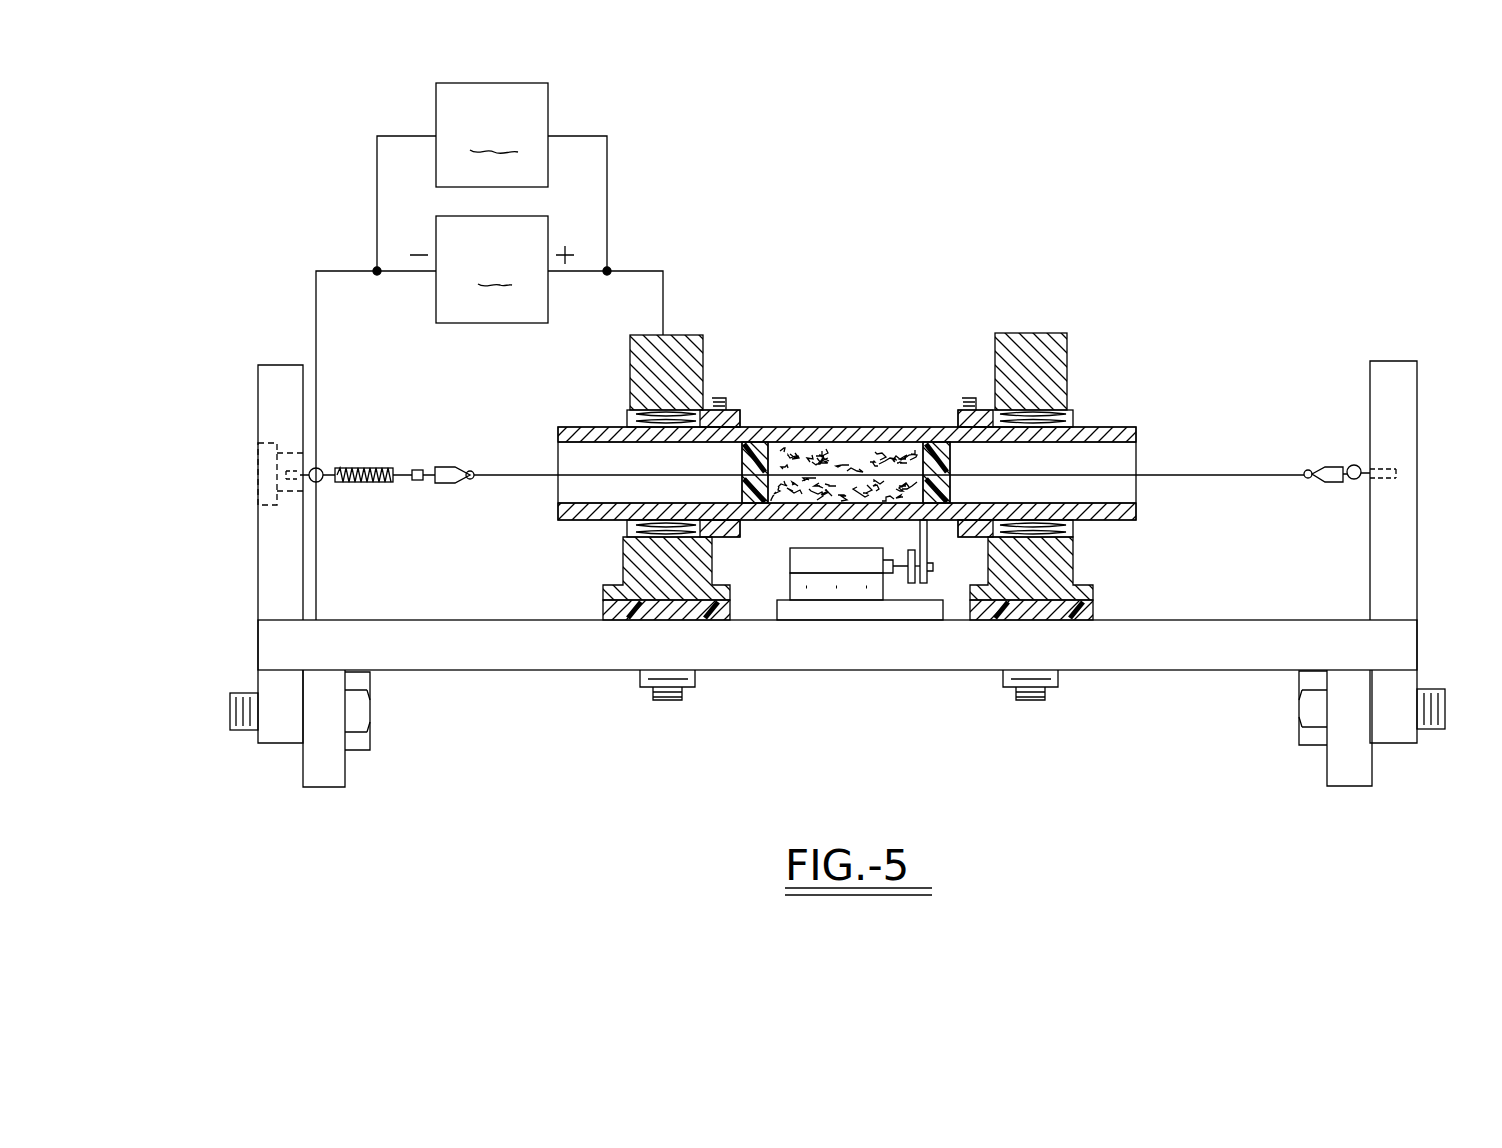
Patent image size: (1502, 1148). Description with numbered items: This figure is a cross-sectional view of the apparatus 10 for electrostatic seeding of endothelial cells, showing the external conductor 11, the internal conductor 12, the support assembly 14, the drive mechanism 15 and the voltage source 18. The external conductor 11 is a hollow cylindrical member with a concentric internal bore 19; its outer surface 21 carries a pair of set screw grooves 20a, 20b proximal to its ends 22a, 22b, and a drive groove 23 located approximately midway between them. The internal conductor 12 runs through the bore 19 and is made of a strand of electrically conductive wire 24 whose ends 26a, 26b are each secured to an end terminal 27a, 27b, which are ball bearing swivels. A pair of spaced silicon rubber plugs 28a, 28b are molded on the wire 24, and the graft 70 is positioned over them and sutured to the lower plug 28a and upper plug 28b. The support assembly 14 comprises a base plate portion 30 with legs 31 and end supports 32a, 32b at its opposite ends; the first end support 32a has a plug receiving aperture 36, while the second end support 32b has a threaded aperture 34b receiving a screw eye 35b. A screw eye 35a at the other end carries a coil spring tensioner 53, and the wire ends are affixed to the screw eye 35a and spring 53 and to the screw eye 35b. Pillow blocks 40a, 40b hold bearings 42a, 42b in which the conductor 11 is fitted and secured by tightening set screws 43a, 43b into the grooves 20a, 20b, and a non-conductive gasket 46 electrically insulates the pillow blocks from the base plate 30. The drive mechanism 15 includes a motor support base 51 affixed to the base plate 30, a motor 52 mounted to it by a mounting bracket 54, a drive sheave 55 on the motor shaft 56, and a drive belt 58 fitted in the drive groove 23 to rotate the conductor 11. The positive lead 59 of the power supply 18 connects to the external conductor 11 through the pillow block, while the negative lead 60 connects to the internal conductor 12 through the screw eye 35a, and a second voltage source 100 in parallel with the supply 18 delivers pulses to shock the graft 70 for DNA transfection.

The apparatus for electrostatic seeding of endothelial cells 10 is at (1143, 215).
The external conductor 11 is at (1120, 420).
The internal conductor 12 is at (506, 468).
The support assembly 14 is at (1130, 561).
The drive mechanism 15 is at (813, 630).
The voltage source 18 is at (492, 269).
The internal bore 19 is at (1114, 452).
The set screw groove 20a is at (740, 427).
The set screw groove 20b is at (960, 427).
The outer surface 21 is at (838, 427).
The end 22a is at (560, 518).
The end 22b is at (1136, 516).
The drive groove 23 is at (920, 427).
The electrically conductive wire 24 is at (1220, 478).
The wire end 26a is at (471, 480).
The wire end 26b is at (1310, 480).
The end terminal 27a is at (455, 466).
The end terminal 27b is at (1330, 466).
The lower plug 28a is at (742, 465).
The upper plug 28b is at (955, 455).
The base plate portion 30 is at (885, 670).
The legs 31 is at (345, 768).
The first end support 32a is at (272, 365).
The second end support 32b is at (1410, 361).
The threaded aperture 34b is at (1396, 473).
The screw eye 35a is at (316, 483).
The screw eye 35b is at (1352, 465).
The plug receiving aperture 36 is at (258, 460).
The pillow block 40a is at (690, 333).
The pillow block 40b is at (1018, 333).
The bearing 42a is at (633, 416).
The bearing 42b is at (1068, 410).
The set screw 43a is at (718, 410).
The set screw 43b is at (965, 408).
The non-conductive gasket 46 is at (603, 608).
The motor support base 51 is at (783, 618).
The motor 52 is at (790, 560).
The coil spring tensioner 53 is at (368, 468).
The mounting bracket 54 is at (790, 585).
The drive sheave 55 is at (913, 583).
The motor shaft 56 is at (910, 560).
The drive belt 58 is at (927, 560).
The positive lead 59 is at (663, 271).
The negative lead 60 is at (316, 271).
The graft 70 is at (953, 492).
The second voltage source 100 is at (492, 135).